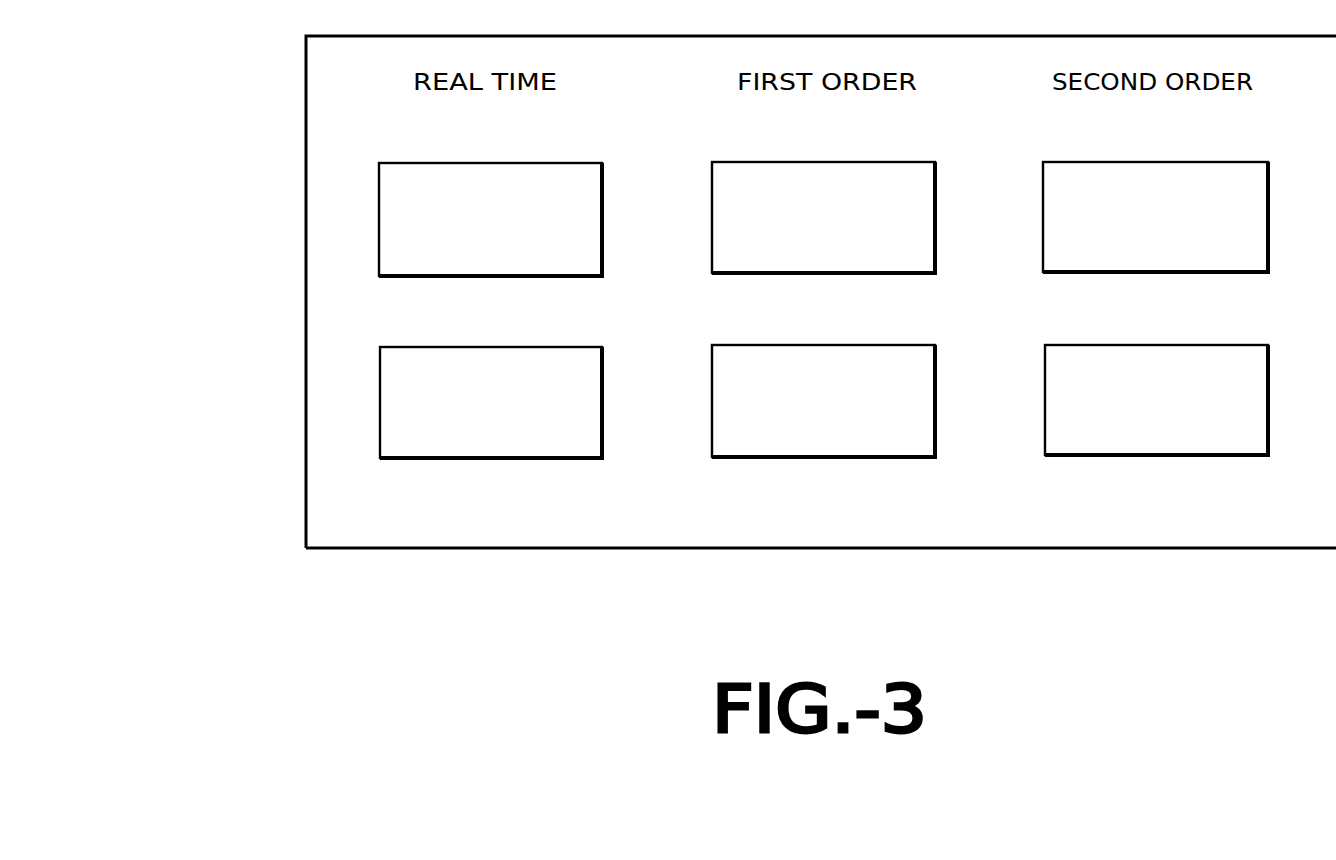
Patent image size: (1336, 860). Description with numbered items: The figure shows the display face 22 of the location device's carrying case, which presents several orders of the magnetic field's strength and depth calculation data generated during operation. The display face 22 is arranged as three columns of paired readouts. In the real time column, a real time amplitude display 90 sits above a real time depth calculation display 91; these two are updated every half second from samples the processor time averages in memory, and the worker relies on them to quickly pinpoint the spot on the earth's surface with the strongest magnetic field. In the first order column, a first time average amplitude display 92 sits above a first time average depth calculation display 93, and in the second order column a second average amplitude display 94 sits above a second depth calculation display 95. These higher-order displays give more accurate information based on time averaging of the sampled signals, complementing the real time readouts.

The display face 22 is at (306, 440).
The real time amplitude display 90 is at (443, 163).
The real time depth calculation display 91 is at (445, 347).
The first time average amplitude display 92 is at (777, 162).
The first time average depth calculation display 93 is at (788, 345).
The second average amplitude display 94 is at (1135, 162).
The second depth calculation display 95 is at (1130, 345).